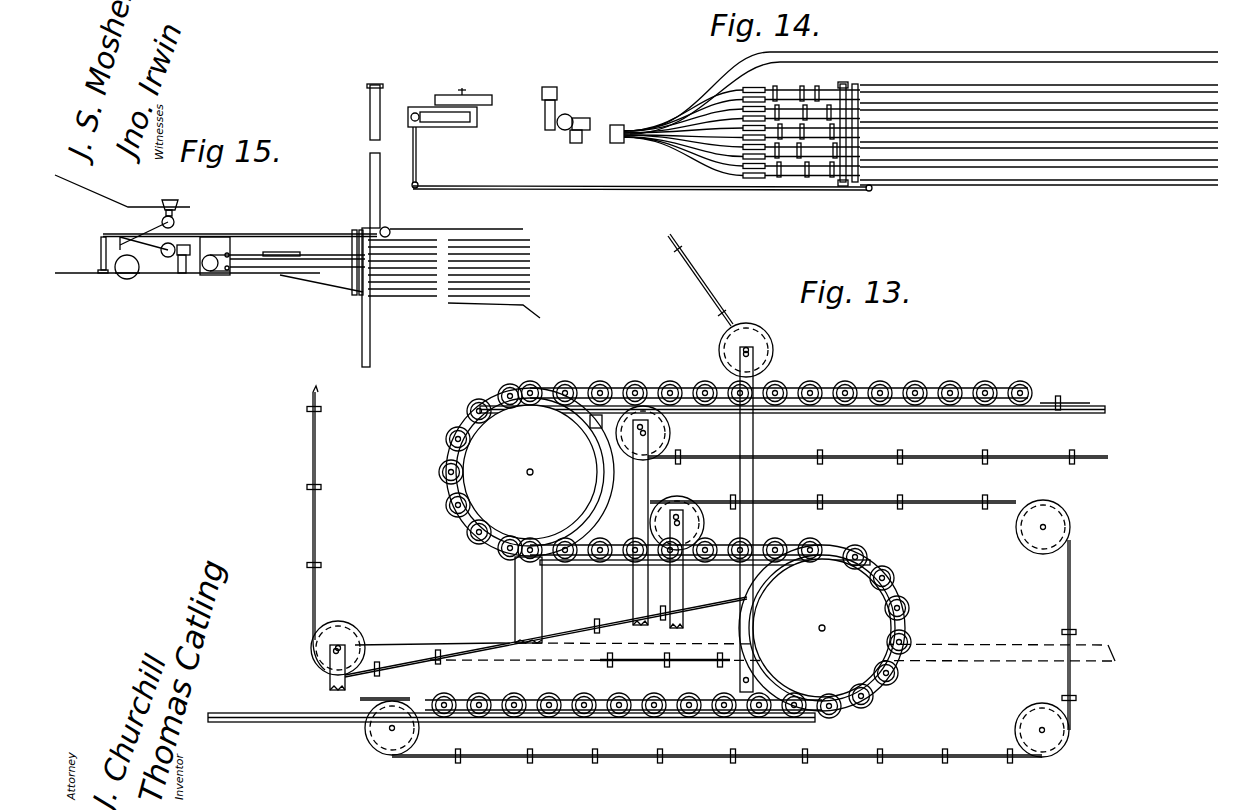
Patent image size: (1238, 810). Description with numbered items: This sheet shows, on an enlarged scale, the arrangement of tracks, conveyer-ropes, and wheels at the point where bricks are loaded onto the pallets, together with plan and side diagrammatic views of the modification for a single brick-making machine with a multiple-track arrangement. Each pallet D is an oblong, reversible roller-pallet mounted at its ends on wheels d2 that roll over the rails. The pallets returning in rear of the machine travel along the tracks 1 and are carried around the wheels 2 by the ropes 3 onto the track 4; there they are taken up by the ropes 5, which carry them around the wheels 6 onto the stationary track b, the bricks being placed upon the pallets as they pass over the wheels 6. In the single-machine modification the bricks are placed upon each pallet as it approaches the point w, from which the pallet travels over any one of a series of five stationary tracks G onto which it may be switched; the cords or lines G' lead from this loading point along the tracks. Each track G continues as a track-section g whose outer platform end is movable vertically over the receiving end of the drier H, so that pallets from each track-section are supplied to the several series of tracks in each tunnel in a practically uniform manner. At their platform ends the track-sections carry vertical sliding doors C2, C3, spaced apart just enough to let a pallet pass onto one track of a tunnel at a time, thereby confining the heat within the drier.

In FIG. 13, the tracks 1 is at (511, 731).
In FIG. 13, the wheels 2 is at (822, 628).
In FIG. 13, the ropes 3 is at (385, 692).
In FIG. 13, the track 4 is at (700, 570).
In FIG. 13, the ropes 5 is at (508, 556).
In FIG. 13, the wheels 6 is at (530, 472).
In FIG. 13, the stationary track b is at (878, 443).
In FIG. 13, the pallet D is at (482, 398).
In FIG. 13, the wheels d2 is at (506, 384).
In FIG. 14, the point w is at (618, 122).
In FIG. 15, the point w is at (225, 252).
In FIG. 14, the stationary tracks G is at (921, 114).
In FIG. 15, the cords G' is at (295, 278).
In FIG. 14, the track-section g is at (833, 170).
In FIG. 15, the track-section g is at (339, 262).
In FIG. 14, the drier H is at (663, 198).
In FIG. 15, the drier H is at (313, 223).
In FIG. 15, the vertical sliding door C2 is at (365, 200).
In FIG. 15, the vertical sliding door C3 is at (365, 328).